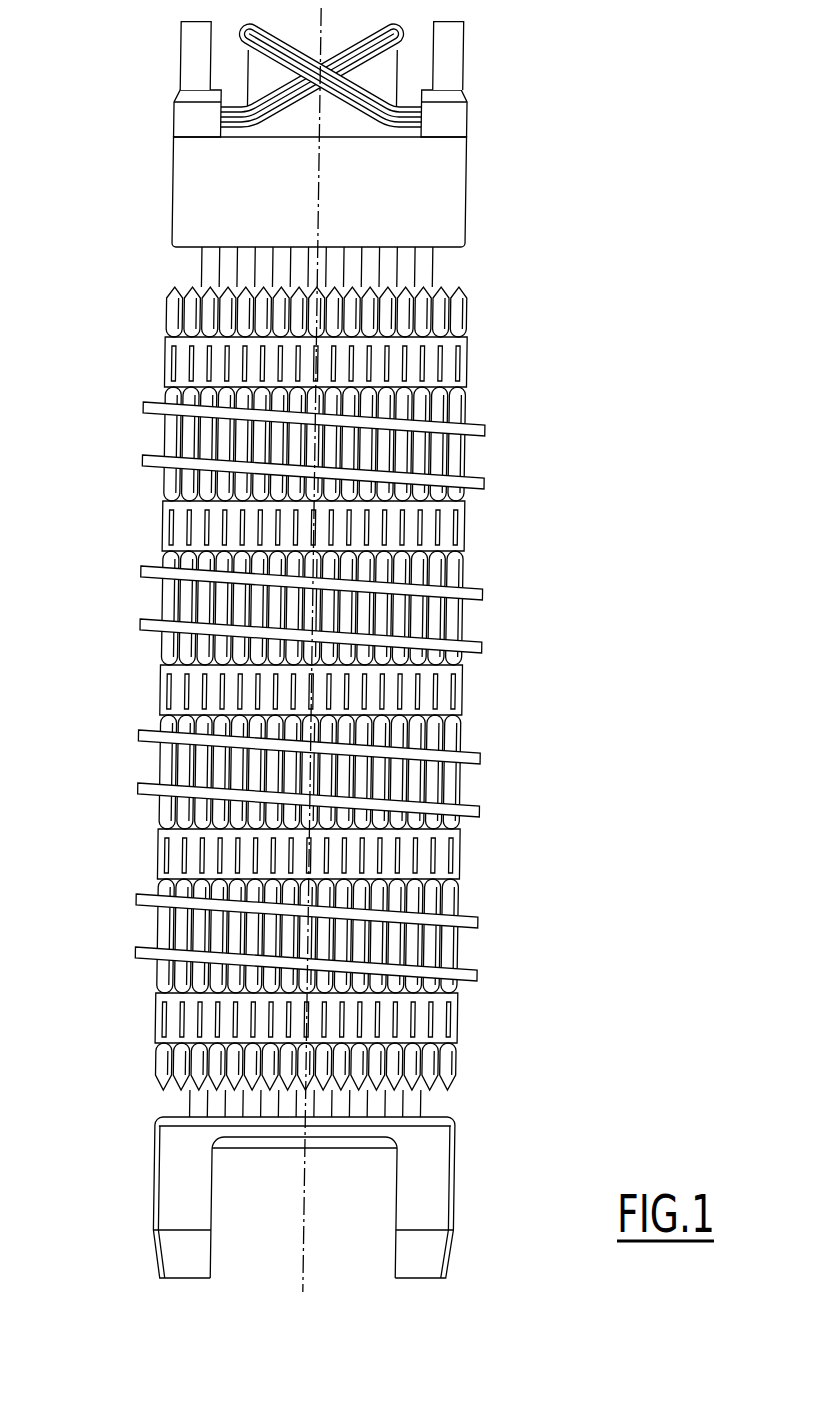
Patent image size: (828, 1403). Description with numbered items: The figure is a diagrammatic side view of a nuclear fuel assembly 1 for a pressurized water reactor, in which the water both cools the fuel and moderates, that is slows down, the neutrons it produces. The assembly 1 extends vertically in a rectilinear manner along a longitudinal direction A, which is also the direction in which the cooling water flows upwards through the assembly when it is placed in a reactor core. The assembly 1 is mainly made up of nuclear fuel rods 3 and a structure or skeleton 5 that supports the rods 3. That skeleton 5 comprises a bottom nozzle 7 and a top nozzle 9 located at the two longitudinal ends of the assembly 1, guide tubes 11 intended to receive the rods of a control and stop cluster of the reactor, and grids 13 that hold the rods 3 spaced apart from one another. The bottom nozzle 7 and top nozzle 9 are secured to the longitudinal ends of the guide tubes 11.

The nuclear fuel assembly 1 is at (347, 650).
The nuclear fuel rods 3 is at (450, 323).
The structure or skeleton 5 is at (374, 134).
The bottom nozzle 7 is at (442, 1198).
The top nozzle 9 is at (454, 178).
The guide tubes 11 is at (245, 275).
The grids 13 is at (164, 366).
The longitudinal direction A is at (321, 1268).